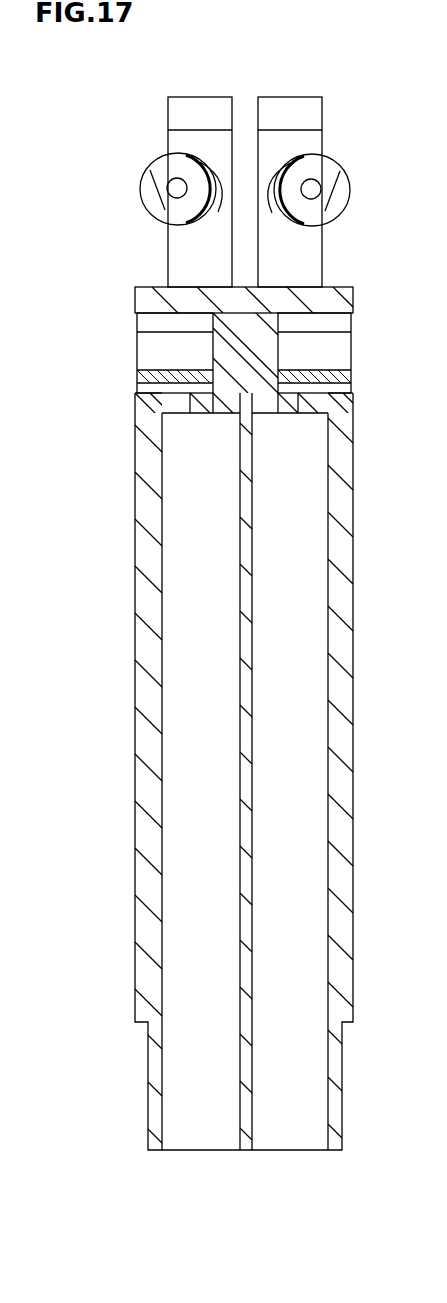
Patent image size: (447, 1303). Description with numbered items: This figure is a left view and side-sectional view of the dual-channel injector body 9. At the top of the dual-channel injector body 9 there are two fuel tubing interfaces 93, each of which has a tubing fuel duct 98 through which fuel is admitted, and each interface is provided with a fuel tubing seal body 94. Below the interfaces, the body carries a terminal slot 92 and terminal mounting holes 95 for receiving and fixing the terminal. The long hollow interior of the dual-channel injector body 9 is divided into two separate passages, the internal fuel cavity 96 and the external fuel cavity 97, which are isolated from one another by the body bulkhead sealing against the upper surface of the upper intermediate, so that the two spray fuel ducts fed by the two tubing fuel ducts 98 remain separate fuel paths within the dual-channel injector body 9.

The dual-channel injector body 9 is at (345, 558).
The terminal slot 92 is at (315, 352).
The fuel tubing interface 93 is at (173, 207).
The fuel tubing seal body 94 is at (208, 112).
The terminal mounting holes 95 is at (290, 408).
The internal fuel cavity 96 is at (290, 703).
The external fuel cavity 97 is at (195, 700).
The tubing fuel duct 98 is at (312, 190).